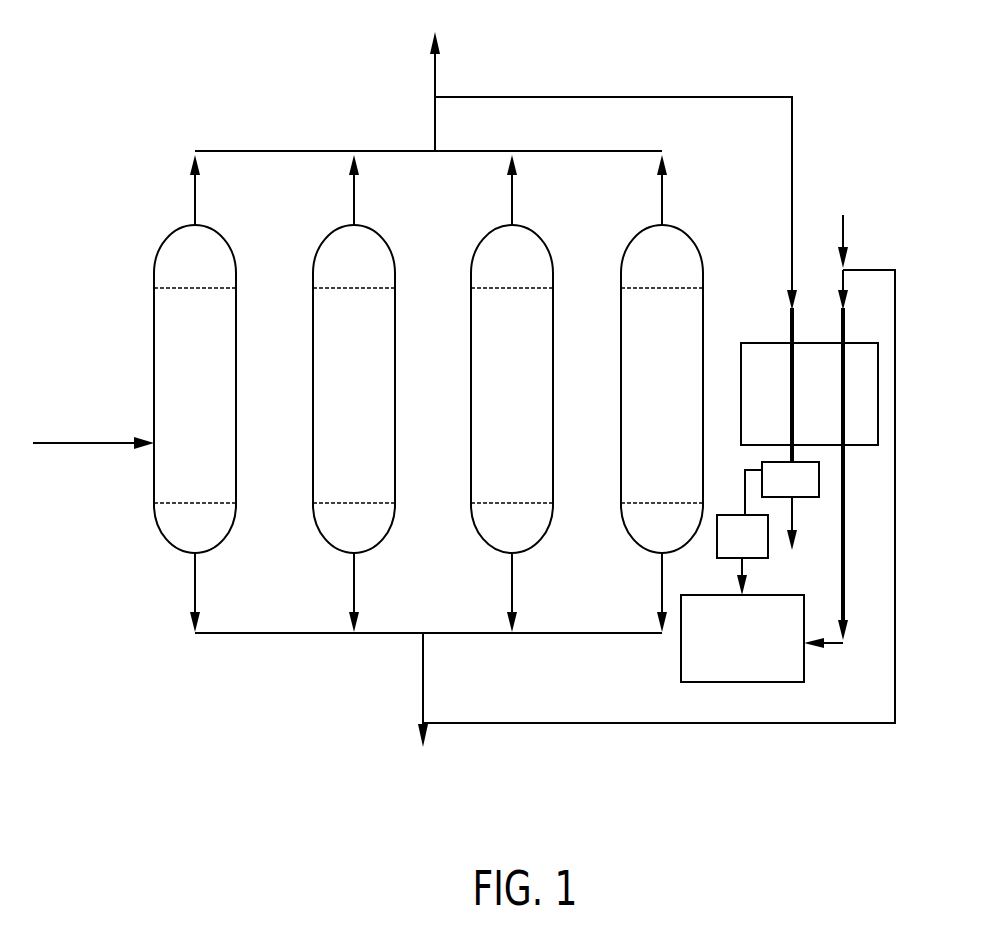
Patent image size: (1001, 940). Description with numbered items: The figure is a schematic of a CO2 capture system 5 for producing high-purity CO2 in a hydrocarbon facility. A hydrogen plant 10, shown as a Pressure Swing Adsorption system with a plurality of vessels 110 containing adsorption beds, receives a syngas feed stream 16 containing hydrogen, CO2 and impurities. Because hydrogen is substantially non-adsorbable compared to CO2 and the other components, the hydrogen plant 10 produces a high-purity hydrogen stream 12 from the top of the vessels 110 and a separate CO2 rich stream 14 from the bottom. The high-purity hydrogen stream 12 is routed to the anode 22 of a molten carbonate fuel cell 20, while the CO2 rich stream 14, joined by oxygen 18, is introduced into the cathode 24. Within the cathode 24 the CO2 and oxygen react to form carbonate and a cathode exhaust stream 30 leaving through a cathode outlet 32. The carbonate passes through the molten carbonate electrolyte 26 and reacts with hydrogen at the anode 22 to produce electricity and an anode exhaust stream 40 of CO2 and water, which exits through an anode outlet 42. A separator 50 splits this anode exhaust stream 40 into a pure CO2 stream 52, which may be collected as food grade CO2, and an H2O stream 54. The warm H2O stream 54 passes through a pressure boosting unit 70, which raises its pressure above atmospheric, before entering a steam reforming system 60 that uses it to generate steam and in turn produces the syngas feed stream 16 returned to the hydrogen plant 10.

The CO2 capture system 5 is at (255, 98).
The hydrogen plant 10 is at (320, 655).
The vessels 110 is at (160, 372).
The high-purity hydrogen stream 12 is at (432, 120).
The CO2 rich stream 14 is at (421, 680).
The feed stream 16 is at (103, 446).
The oxygen 18 is at (846, 232).
The molten carbonate fuel cell 20 is at (808, 404).
The anode 22 is at (771, 357).
The cathode 24 is at (868, 358).
The molten carbonate electrolyte 26 is at (829, 357).
The cathode exhaust stream 30 is at (845, 593).
The cathode outlet 32 is at (845, 447).
The anode exhaust stream 40 is at (790, 460).
The anode outlet 42 is at (790, 448).
The separator 50 is at (812, 485).
The pure CO2 stream 52 is at (795, 522).
The H2O stream 54 is at (743, 498).
The steam reforming system 60 is at (790, 658).
The pressure boosting unit 70 is at (755, 552).